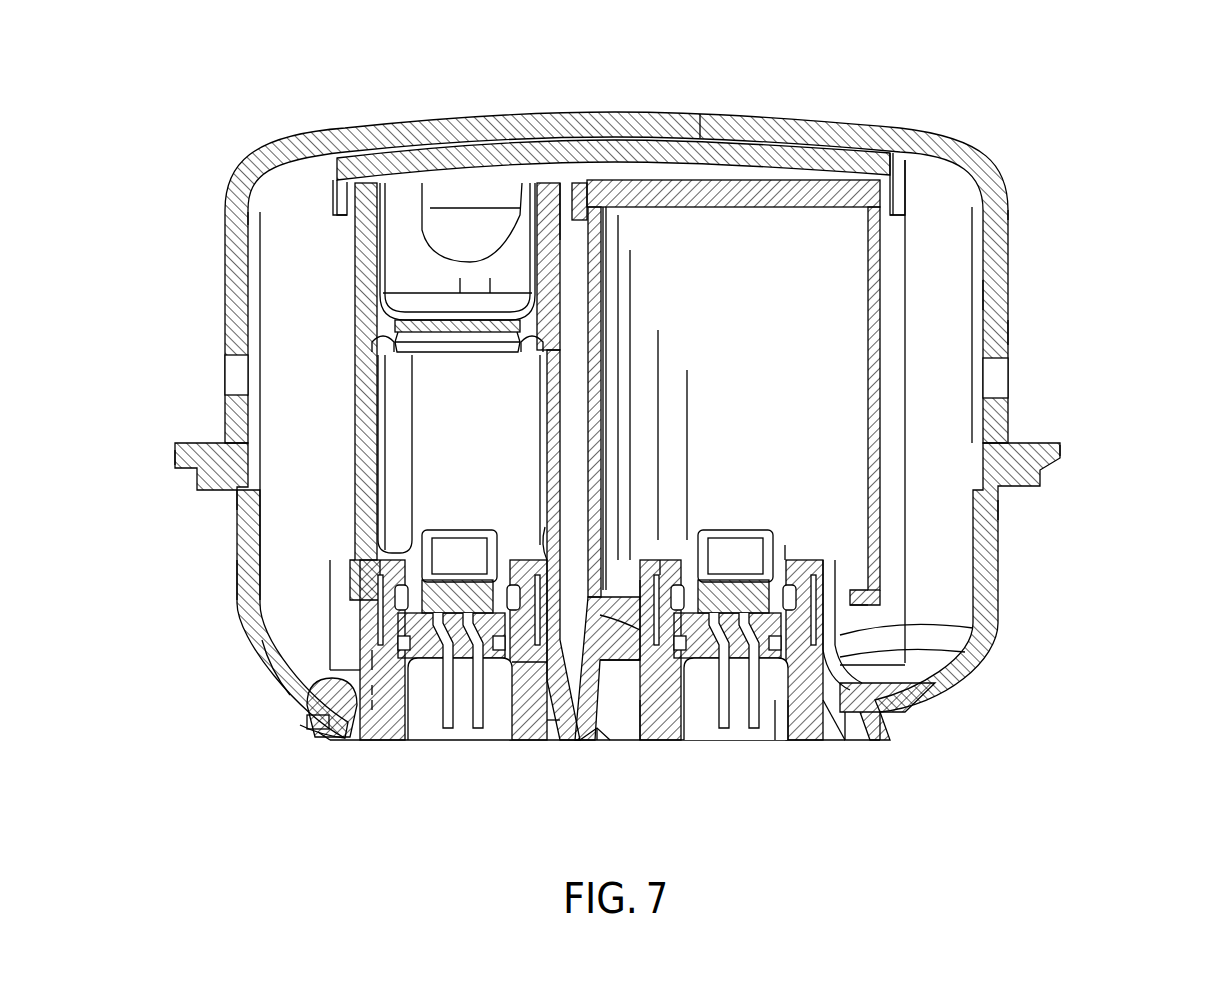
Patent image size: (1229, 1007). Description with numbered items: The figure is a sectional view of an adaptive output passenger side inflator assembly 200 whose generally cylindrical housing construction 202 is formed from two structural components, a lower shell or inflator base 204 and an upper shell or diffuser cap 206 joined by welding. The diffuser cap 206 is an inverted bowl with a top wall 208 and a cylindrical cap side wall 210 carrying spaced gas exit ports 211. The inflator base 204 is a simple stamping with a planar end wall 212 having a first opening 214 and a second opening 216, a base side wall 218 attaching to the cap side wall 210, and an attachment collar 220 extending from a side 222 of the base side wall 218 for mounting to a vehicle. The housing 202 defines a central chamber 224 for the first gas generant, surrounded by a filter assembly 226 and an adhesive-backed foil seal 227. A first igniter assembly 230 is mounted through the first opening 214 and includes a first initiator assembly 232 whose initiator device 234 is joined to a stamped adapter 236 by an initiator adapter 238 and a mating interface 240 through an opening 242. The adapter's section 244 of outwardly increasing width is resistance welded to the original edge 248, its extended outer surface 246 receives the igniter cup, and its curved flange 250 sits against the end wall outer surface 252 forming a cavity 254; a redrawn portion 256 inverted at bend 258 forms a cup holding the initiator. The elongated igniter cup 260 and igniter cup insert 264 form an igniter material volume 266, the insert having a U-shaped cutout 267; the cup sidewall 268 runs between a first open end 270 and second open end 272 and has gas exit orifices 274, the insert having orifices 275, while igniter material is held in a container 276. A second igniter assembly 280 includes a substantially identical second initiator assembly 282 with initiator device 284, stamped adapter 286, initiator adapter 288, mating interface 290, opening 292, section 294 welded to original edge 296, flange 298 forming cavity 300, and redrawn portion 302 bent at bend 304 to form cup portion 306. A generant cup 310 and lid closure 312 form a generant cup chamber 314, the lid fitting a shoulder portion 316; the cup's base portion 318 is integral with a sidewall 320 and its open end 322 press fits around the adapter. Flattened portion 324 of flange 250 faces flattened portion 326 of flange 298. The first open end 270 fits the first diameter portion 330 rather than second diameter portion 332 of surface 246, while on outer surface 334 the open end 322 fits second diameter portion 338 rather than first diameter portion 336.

The adaptive output passenger side inflator assembly 200 is at (1138, 77).
The housing construction 202 is at (1012, 241).
The inflator base 204 is at (998, 550).
The diffuser cap 206 is at (1000, 294).
The top wall 208 is at (700, 114).
The cap side wall 210 is at (1000, 330).
The gas exit ports 211 is at (225, 380).
The end wall 212 is at (905, 712).
The first opening 214 is at (305, 722).
The second opening 216 is at (940, 688).
The base side wall 218 is at (998, 505).
The attachment collar 220 is at (1060, 452).
The side of the base side wall 222 is at (228, 495).
The chamber 224 is at (575, 240).
The filter assembly 226 is at (292, 187).
The foil seal 227 is at (238, 195).
The first igniter assembly 230 is at (352, 270).
The first initiator assembly 232 is at (440, 752).
The initiator device 234 is at (440, 515).
The stamped adapter 236 is at (350, 668).
The initiator adapter 238 is at (503, 548).
The mating interface 240 is at (530, 745).
The opening 242 is at (522, 743).
The section of outwardly increasing width 244 is at (365, 745).
The outer surface 246 is at (345, 688).
The original edge 248 is at (322, 745).
The flange 250 is at (312, 723).
The outer surface of the end wall 252 is at (282, 705).
The cavity 254 is at (317, 733).
The redrawn portion 256 is at (352, 600).
The bend 258 is at (545, 527).
The igniter cup 260 is at (352, 400).
The igniter cup insert 264 is at (392, 200).
The igniter material volume 266 is at (195, 464).
The U-shaped cutout 267 is at (468, 255).
The sidewall 268 is at (378, 400).
The first open end 270 is at (367, 622).
The second open end 272 is at (345, 185).
The gas exit orifices 274 is at (385, 353).
The gas exit orifices 275 is at (505, 325).
The container 276 is at (382, 440).
The second igniter assembly 280 is at (895, 218).
The second initiator assembly 282 is at (745, 752).
The initiator device 284 is at (725, 528).
The stamped adapter 286 is at (990, 622).
The initiator adapter 288 is at (785, 545).
The mating interface 290 is at (790, 745).
The opening 292 is at (775, 743).
The section of outwardly increasing width 294 is at (630, 745).
The original edge 296 is at (845, 745).
The flange 298 is at (860, 745).
The cavity 300 is at (890, 735).
The redrawn portion 302 is at (668, 565).
The bend 304 is at (815, 560).
The cup portion 306 is at (652, 588).
The generant cup 310 is at (885, 430).
The lid closure 312 is at (780, 180).
The generant cup chamber 314 is at (820, 258).
The shoulder portion 316 is at (882, 322).
The base portion 318 is at (628, 637).
The sidewall 320 is at (603, 318).
The open end 322 is at (628, 672).
The flattened portion 324 is at (590, 745).
The flattened portion 326 is at (610, 745).
The first diameter portion 330 is at (355, 680).
The second diameter portion 332 is at (360, 667).
The outer surface 334 is at (836, 576).
The first diameter portion 336 is at (882, 596).
The second diameter portion 338 is at (962, 664).